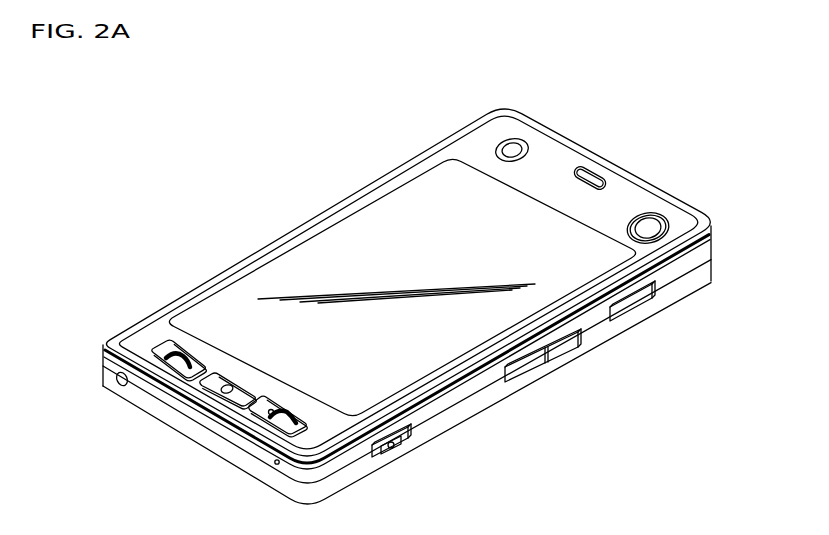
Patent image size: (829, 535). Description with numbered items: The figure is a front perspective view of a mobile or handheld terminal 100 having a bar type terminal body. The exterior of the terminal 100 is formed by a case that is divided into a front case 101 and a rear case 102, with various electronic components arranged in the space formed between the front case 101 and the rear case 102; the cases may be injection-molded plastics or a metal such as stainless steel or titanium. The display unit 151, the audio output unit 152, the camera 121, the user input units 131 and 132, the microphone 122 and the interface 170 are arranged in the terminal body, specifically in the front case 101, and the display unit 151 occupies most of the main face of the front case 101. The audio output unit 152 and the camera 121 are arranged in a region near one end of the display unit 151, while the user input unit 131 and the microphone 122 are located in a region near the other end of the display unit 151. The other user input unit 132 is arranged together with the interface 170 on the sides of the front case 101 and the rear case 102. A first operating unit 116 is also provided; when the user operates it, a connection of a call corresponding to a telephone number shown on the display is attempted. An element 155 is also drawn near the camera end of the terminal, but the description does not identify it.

The mobile terminal 100 is at (377, 168).
The front case 101 is at (703, 247).
The rear case 102 is at (707, 270).
The first operating unit 116 is at (117, 383).
The camera 121 is at (517, 145).
The microphone 122 is at (274, 466).
The user input unit 131 is at (162, 351).
The user input unit 132 is at (525, 368).
The display unit 151 is at (312, 247).
The audio output unit 152 is at (600, 175).
The sensor 155 is at (653, 224).
The interface 170 is at (632, 305).